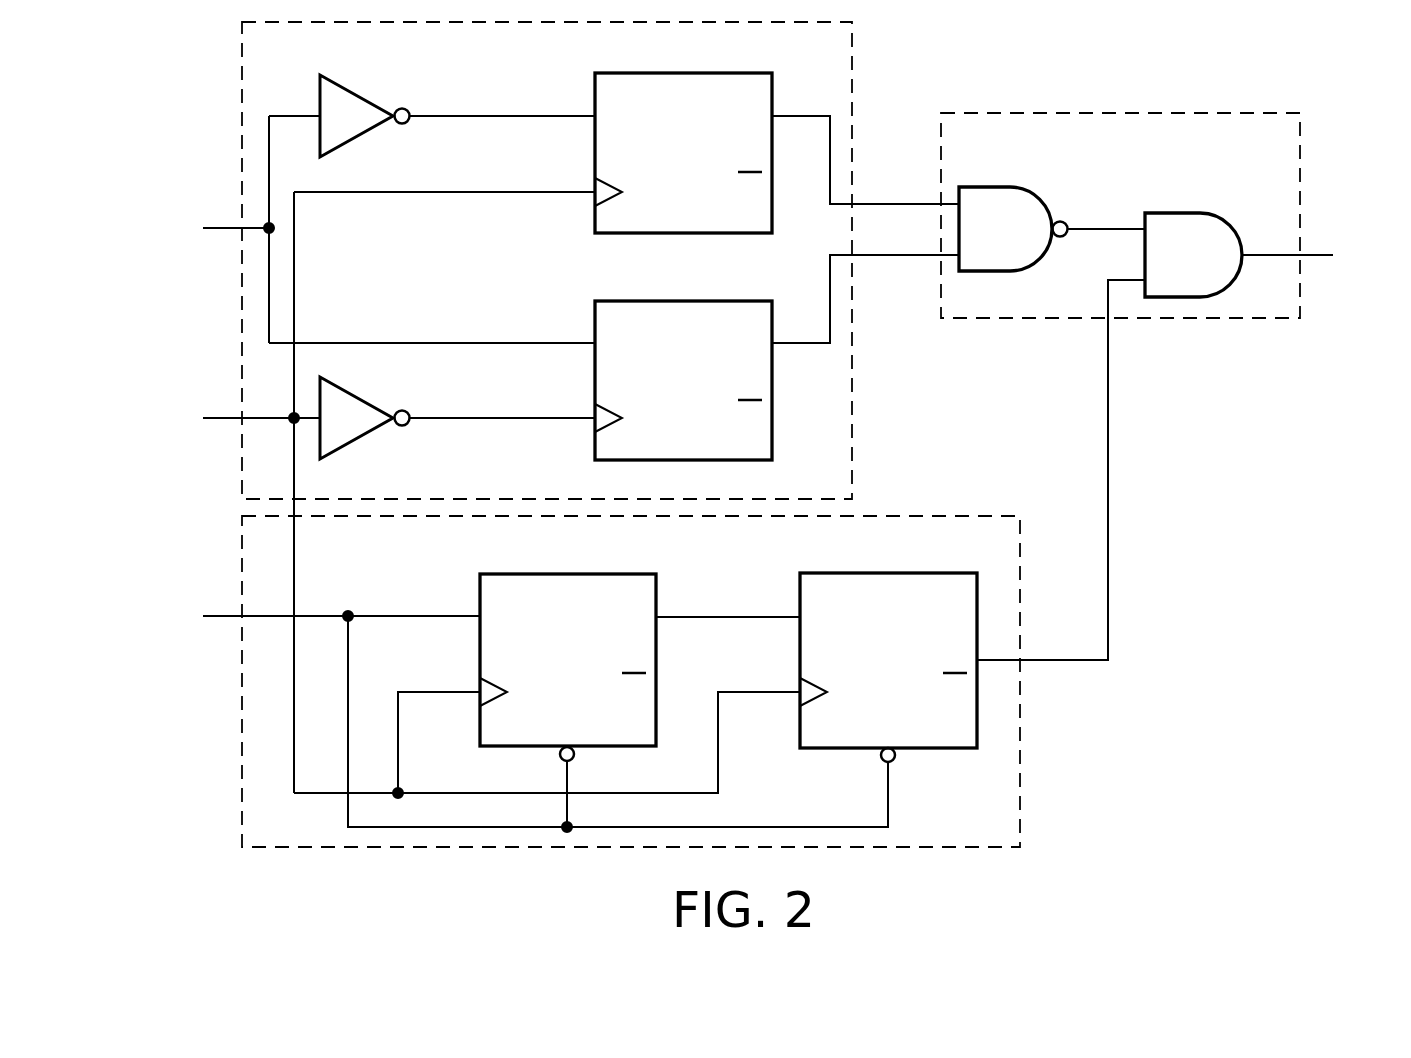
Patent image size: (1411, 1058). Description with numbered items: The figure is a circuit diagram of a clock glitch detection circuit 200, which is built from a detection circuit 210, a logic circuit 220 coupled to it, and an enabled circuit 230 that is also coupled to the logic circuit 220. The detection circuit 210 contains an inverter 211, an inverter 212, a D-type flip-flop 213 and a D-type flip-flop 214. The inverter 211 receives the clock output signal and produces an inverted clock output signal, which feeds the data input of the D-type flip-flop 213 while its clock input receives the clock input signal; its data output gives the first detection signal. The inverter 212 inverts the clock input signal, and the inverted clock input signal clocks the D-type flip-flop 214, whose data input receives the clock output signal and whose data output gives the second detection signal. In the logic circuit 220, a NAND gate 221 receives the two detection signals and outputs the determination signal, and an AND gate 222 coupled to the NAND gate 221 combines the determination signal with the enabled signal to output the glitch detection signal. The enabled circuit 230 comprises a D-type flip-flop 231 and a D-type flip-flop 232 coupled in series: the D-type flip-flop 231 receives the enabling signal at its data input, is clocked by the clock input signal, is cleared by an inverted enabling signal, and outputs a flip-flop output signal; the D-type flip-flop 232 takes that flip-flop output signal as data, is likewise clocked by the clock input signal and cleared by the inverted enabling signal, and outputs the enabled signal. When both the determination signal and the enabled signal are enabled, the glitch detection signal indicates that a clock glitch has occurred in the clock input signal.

The clock glitch detection circuit 200 is at (1357, 861).
The detection circuit 210 is at (242, 97).
The inverter 211 is at (386, 77).
The inverter 212 is at (386, 379).
The D-type flip-flop 213 is at (727, 72).
The D-type flip-flop 214 is at (727, 300).
The logic circuit 220 is at (1207, 112).
The NAND gate 221 is at (1048, 198).
The AND gate 222 is at (1232, 227).
The enabled circuit 230 is at (242, 748).
The D-type flip-flop 231 is at (613, 574).
The D-type flip-flop 232 is at (935, 573).